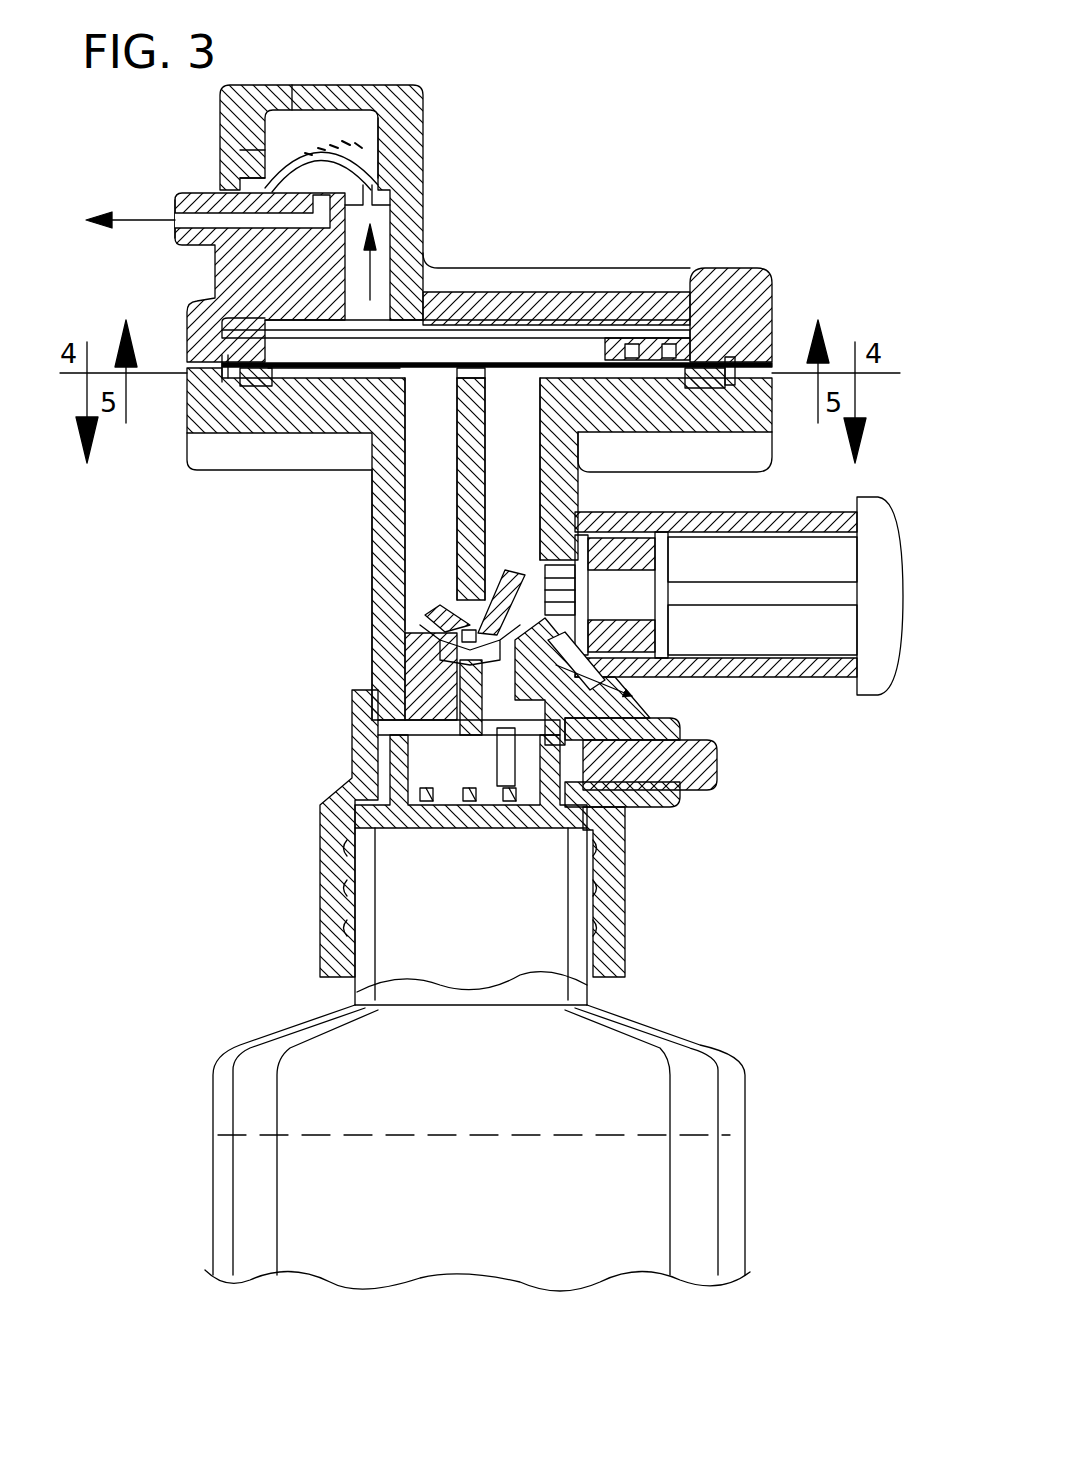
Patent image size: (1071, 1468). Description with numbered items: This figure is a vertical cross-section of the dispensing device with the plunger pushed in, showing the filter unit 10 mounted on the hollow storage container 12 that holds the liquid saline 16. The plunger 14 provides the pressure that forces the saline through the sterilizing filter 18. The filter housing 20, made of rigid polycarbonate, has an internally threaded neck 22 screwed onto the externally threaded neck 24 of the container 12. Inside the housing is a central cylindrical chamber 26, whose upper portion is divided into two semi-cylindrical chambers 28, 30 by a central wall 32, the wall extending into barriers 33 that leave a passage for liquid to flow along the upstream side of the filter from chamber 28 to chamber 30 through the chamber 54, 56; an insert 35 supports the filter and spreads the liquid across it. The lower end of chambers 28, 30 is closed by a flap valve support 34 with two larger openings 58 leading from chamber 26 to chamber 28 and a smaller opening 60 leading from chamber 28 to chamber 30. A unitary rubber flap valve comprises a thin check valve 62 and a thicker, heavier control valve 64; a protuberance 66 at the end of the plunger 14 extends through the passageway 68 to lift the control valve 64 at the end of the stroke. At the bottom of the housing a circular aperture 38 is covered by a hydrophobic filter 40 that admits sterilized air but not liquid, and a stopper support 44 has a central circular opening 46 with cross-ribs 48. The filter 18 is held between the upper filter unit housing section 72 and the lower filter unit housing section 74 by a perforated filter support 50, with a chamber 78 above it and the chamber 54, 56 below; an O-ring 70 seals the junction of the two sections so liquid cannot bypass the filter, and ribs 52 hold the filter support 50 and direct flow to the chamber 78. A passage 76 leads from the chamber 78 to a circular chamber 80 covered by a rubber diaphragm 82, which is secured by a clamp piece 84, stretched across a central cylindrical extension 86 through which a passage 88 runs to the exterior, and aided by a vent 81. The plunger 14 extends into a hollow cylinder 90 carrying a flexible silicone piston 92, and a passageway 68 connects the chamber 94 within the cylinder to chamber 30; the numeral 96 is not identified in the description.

The filter unit 10 is at (708, 233).
The hollow storage container 12 is at (216, 1052).
The plunger 14 is at (960, 735).
The liquid saline 16 is at (410, 1128).
The sterilizing filter 18 is at (300, 374).
The filter housing 20 is at (770, 278).
The internally threaded neck 22 is at (628, 898).
The externally threaded neck 24 is at (395, 993).
The central cylindrical chamber 26 is at (442, 700).
The semi-cylindrical chamber 28 is at (431, 504).
The semi-cylindrical chamber 30 is at (512, 489).
The central wall 32 is at (372, 518).
The barrier 33 is at (446, 374).
The flap valve support 34 is at (470, 738).
The insert 35 is at (352, 372).
The circular aperture 38 is at (668, 805).
The hydrophobic filter 40 is at (718, 762).
The stopper support 44 is at (394, 838).
The central circular opening 46 is at (500, 838).
The cross-ribs 48 is at (475, 805).
The filter support 50 is at (355, 345).
The ribs 52 is at (460, 325).
The chamber 54 is at (270, 365).
The chamber 56 is at (600, 374).
The openings 58 is at (430, 660).
The opening 60 is at (599, 681).
The check valve 62 is at (428, 628).
The control valve 64 is at (500, 580).
The protuberance 66 is at (548, 565).
The passageway 68 is at (578, 535).
The O-ring 70 is at (700, 382).
The upper filter unit housing section 72 is at (200, 312).
The lower filter unit housing section 74 is at (200, 438).
The passage 76 is at (392, 232).
The chamber 78 is at (268, 272).
The circular chamber 80 is at (365, 118).
The vent 81 is at (292, 85).
The diaphragm 82 is at (395, 190).
The clamp piece 84 is at (352, 85).
The central cylindrical extension 86 is at (395, 160).
The passage 88 is at (178, 213).
The hollow cylinder 90 is at (800, 678).
The flexible silicone piston 92 is at (640, 555).
The chamber 94 is at (775, 542).
The valve head 96 is at (468, 628).